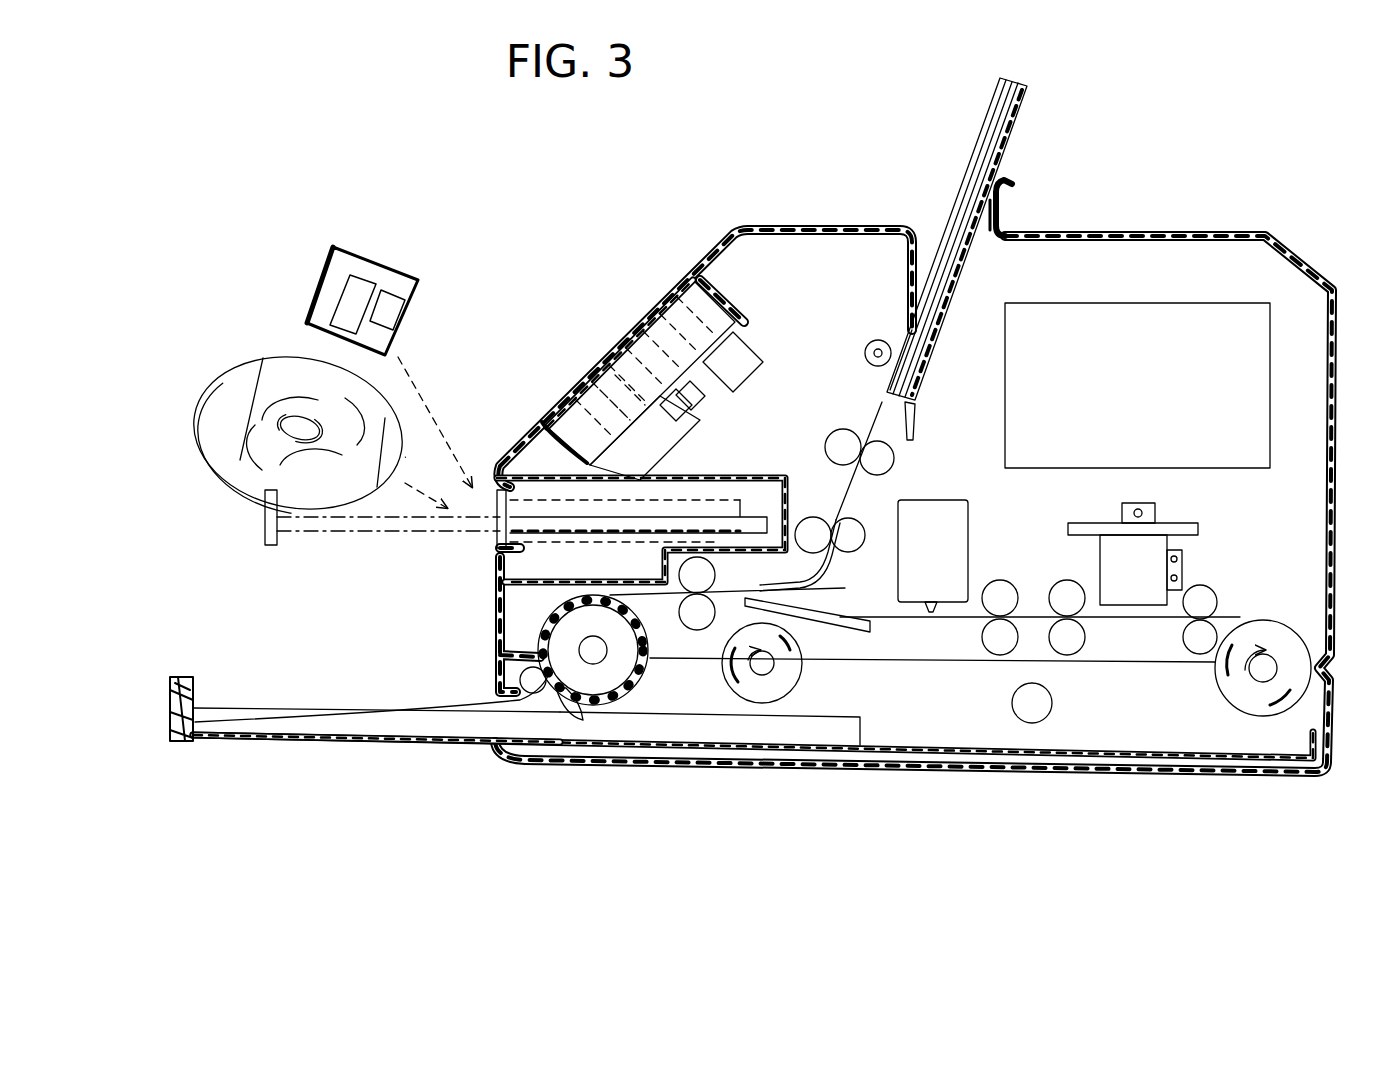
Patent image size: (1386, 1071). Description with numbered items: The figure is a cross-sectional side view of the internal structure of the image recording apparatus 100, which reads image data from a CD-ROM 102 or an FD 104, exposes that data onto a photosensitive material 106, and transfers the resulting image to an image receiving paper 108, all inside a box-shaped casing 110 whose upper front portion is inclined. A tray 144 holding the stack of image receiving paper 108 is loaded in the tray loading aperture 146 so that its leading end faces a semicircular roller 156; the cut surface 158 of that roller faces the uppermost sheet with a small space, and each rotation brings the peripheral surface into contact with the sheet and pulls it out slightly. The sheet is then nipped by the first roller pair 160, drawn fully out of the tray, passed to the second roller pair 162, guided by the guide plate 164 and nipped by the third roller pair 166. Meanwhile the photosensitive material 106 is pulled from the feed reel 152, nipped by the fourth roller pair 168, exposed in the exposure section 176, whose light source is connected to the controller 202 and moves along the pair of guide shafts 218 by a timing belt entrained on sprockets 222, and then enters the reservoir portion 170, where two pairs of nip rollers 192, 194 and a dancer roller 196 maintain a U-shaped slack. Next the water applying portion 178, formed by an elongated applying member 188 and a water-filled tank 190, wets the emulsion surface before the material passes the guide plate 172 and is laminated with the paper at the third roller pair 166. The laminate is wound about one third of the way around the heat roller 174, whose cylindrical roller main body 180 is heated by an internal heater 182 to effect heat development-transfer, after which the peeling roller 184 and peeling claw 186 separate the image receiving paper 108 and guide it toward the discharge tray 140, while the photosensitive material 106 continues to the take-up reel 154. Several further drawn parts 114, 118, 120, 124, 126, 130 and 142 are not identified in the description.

The image recording apparatus 100 is at (693, 190).
The CD-ROM 102 is at (258, 360).
The FD 104 is at (404, 264).
The photosensitive material 106 is at (1228, 622).
The image receiving paper 108 is at (978, 122).
The casing 110 is at (822, 228).
The print head 114 is at (672, 305).
The heating element 118 is at (662, 412).
The head support 120 is at (748, 345).
The guide 124 is at (497, 551).
The insertion slot 126 is at (540, 478).
The spindle axis 130 is at (500, 505).
The discharge tray 140 is at (312, 740).
The stopper 142 is at (196, 705).
The tray 144 is at (1016, 115).
The tray loading aperture 146 is at (912, 250).
The feed reel 152 is at (1262, 678).
The take-up reel 154 is at (770, 680).
The semicircular roller 156 is at (870, 345).
The cut surface 158 is at (862, 353).
The first roller pair 160 is at (900, 458).
The second roller pair 162 is at (870, 518).
The guide plate 164 is at (838, 570).
The third roller pair 166 is at (702, 563).
The fourth roller pair 168 is at (1206, 586).
The reservoir portion 170 is at (1030, 736).
The guide plate 172 is at (868, 630).
The heat roller 174 is at (650, 692).
The exposure section 176 is at (1178, 523).
The water applying portion 178 is at (972, 531).
The roller main body 180 is at (600, 700).
The heater 182 is at (590, 650).
The peeling roller 184 is at (524, 672).
The peeling claw 186 is at (560, 708).
The applying member 188 is at (935, 613).
The tank 190 is at (950, 562).
The nip rollers 192 is at (1072, 641).
The nip rollers 194 is at (995, 642).
The dancer roller 196 is at (1046, 706).
The controller 202 is at (1120, 300).
The guide shafts 218 is at (1172, 578).
The sprockets 222 is at (1130, 510).